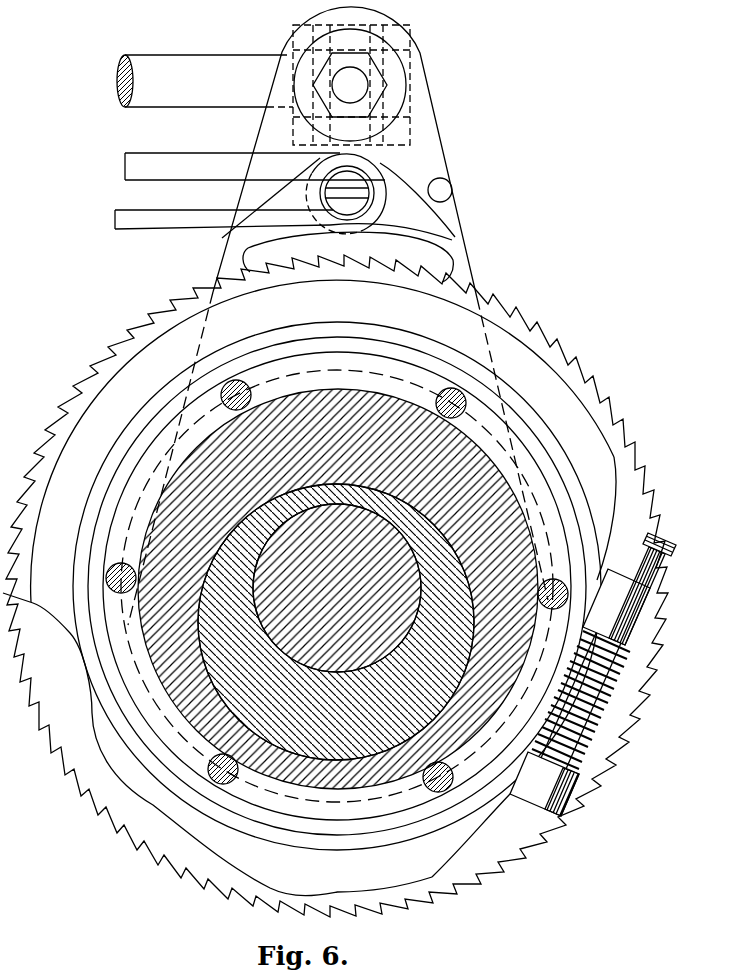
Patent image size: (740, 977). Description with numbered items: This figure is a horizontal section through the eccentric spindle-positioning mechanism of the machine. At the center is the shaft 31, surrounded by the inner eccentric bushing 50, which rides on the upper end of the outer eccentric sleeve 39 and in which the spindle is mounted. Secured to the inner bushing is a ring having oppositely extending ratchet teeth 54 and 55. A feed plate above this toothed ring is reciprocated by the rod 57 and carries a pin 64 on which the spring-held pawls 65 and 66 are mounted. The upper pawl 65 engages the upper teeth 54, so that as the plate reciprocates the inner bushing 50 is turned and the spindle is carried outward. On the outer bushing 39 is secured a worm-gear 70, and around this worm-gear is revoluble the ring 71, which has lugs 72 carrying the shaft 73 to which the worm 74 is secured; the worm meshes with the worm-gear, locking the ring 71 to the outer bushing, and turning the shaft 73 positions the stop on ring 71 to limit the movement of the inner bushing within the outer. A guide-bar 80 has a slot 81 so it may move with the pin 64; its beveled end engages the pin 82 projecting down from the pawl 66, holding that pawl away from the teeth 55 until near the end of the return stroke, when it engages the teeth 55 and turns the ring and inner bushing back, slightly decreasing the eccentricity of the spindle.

The shaft 31 is at (290, 632).
The outer eccentric sleeve 39 is at (321, 400).
The inner eccentric bushing 50 is at (297, 728).
The ratchet teeth 54 is at (42, 712).
The ratchet teeth 55 is at (172, 868).
The rod 57 is at (202, 81).
The pin 64 is at (362, 188).
The pawl 65 is at (247, 247).
The pawl 66 is at (455, 250).
The worm-gear 70 is at (367, 805).
The ring 71 is at (537, 388).
The lugs 72 is at (580, 692).
The shaft 73 is at (650, 545).
The worm 74 is at (577, 707).
The guide-bar 80 is at (255, 166).
The slot 81 is at (140, 194).
The pin 82 is at (452, 190).